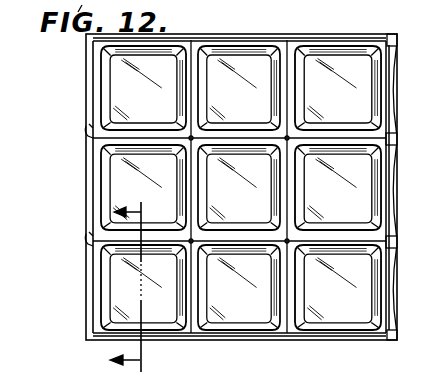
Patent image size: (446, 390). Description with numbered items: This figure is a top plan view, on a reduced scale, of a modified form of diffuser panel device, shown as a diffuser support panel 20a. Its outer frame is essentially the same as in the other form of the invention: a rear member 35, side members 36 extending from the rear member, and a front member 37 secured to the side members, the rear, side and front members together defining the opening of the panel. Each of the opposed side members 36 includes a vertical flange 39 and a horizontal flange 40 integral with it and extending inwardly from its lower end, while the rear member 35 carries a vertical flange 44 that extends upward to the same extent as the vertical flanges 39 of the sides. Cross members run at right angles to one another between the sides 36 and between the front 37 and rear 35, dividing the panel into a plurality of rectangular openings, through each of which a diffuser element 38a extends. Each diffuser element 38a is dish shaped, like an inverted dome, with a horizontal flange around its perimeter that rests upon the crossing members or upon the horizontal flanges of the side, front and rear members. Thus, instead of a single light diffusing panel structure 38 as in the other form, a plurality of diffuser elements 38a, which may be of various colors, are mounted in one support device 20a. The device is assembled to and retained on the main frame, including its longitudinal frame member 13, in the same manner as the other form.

The longitudinal frame member 13 is at (113, 281).
The diffuser support panel 20a is at (323, 31).
The rear member 35 is at (86, 188).
The side members 36 is at (279, 39).
The front member 37 is at (389, 183).
The light diffusing panel structure 38 is at (273, 165).
The diffuser element 38a is at (350, 121).
The vertical flange 39 is at (226, 35).
The horizontal flange 40 is at (152, 5).
The vertical flange 44 is at (90, 130).